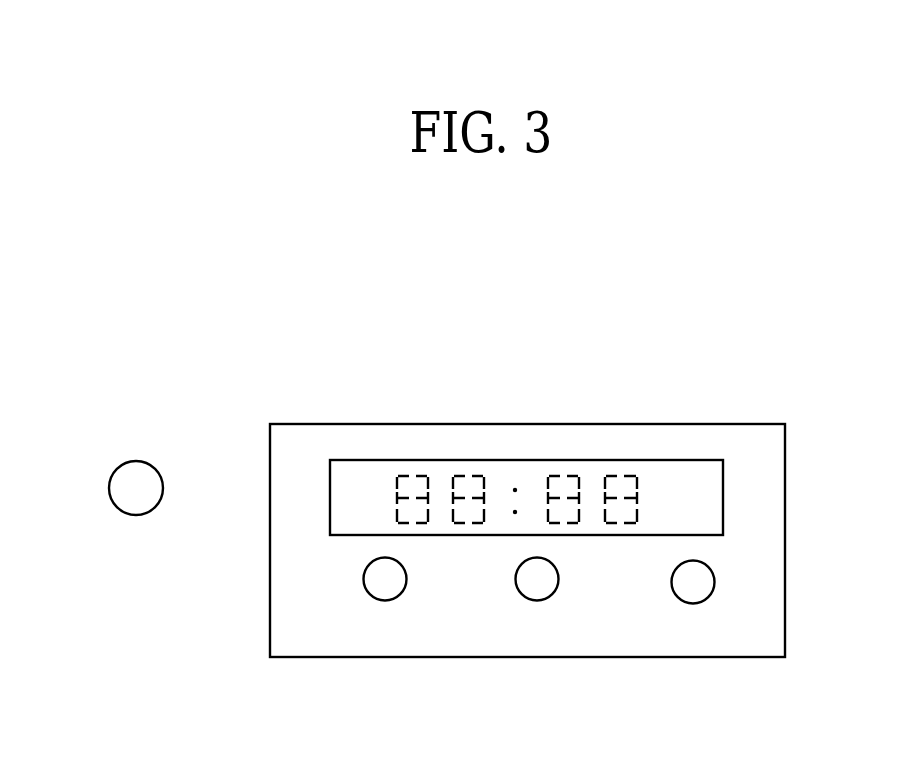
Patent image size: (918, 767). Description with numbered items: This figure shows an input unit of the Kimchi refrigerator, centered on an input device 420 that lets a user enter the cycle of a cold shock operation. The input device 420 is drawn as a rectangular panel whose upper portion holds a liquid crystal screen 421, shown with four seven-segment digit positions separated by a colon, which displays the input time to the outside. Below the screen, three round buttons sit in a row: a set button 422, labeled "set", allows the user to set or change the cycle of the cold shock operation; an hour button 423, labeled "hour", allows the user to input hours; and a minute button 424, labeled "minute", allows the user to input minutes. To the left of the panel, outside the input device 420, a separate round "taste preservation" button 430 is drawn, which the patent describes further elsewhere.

The input device 420 is at (602, 412).
The liquid crystal screen 421 is at (381, 460).
The set button 422 is at (378, 575).
The hour button 423 is at (527, 577).
The minute button 424 is at (703, 580).
The taste preservation button 430 is at (136, 475).